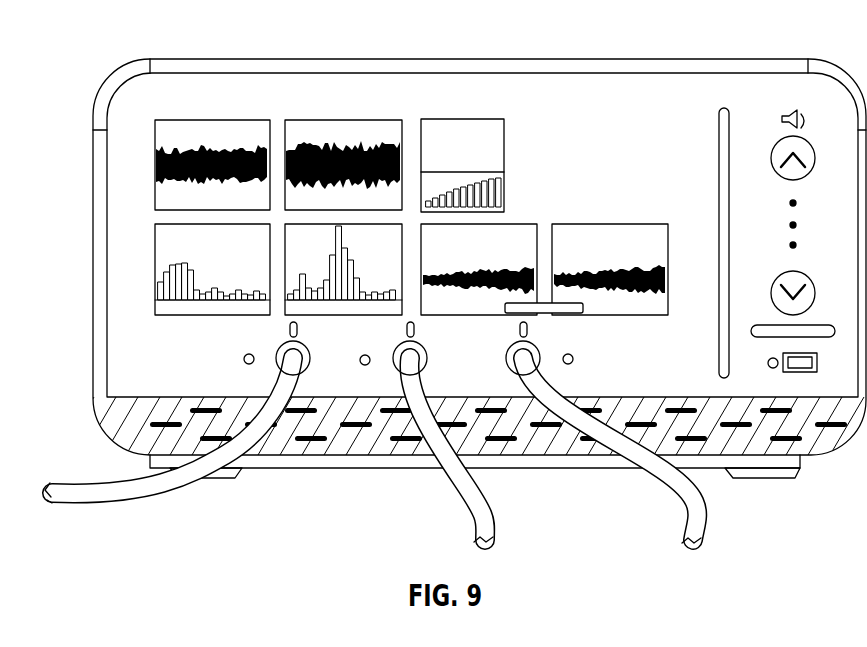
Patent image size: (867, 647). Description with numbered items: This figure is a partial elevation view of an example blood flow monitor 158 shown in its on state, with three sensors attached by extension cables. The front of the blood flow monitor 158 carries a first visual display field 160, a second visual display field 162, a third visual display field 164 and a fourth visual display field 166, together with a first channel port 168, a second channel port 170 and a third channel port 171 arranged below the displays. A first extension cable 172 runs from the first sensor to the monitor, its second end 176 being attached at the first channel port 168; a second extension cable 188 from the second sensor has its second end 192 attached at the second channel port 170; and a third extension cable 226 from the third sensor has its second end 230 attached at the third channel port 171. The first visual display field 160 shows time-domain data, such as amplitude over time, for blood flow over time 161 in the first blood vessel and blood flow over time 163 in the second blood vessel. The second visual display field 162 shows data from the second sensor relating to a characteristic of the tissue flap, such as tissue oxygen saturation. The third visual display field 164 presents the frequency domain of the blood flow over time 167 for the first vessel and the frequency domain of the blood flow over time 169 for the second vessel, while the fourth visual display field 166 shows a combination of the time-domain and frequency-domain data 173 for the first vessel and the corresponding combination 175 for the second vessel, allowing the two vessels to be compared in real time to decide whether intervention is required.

The blood flow monitor 158 is at (697, 42).
The first visual display field 160 is at (235, 118).
The blood flow over time for the first blood vessel 161 is at (323, 137).
The second visual display field 162 is at (487, 115).
The blood flow over time for the second blood vessel 163 is at (158, 142).
The third visual display field 164 is at (190, 320).
The fourth visual display field 166 is at (642, 222).
The frequency domain of the blood flow over time for the first blood vessel 167 is at (305, 258).
The frequency domain of the blood flow over time for the second blood vessel 169 is at (162, 270).
The first channel port 168 is at (315, 355).
The second channel port 170 is at (545, 355).
The third channel port 171 is at (430, 353).
The first extension cable 172 is at (135, 510).
The combination of blood flow over time and frequency domain for the first blood ves 173 is at (635, 262).
The combination of blood flow over time and frequency domain for the second blood ve 175 is at (503, 262).
The second end of the first extension cable 176 is at (285, 352).
The second extension cable 188 is at (660, 492).
The second end of the second extension cable 192 is at (540, 365).
The third extension cable 226 is at (472, 505).
The second end of the third extension cable 230 is at (425, 365).